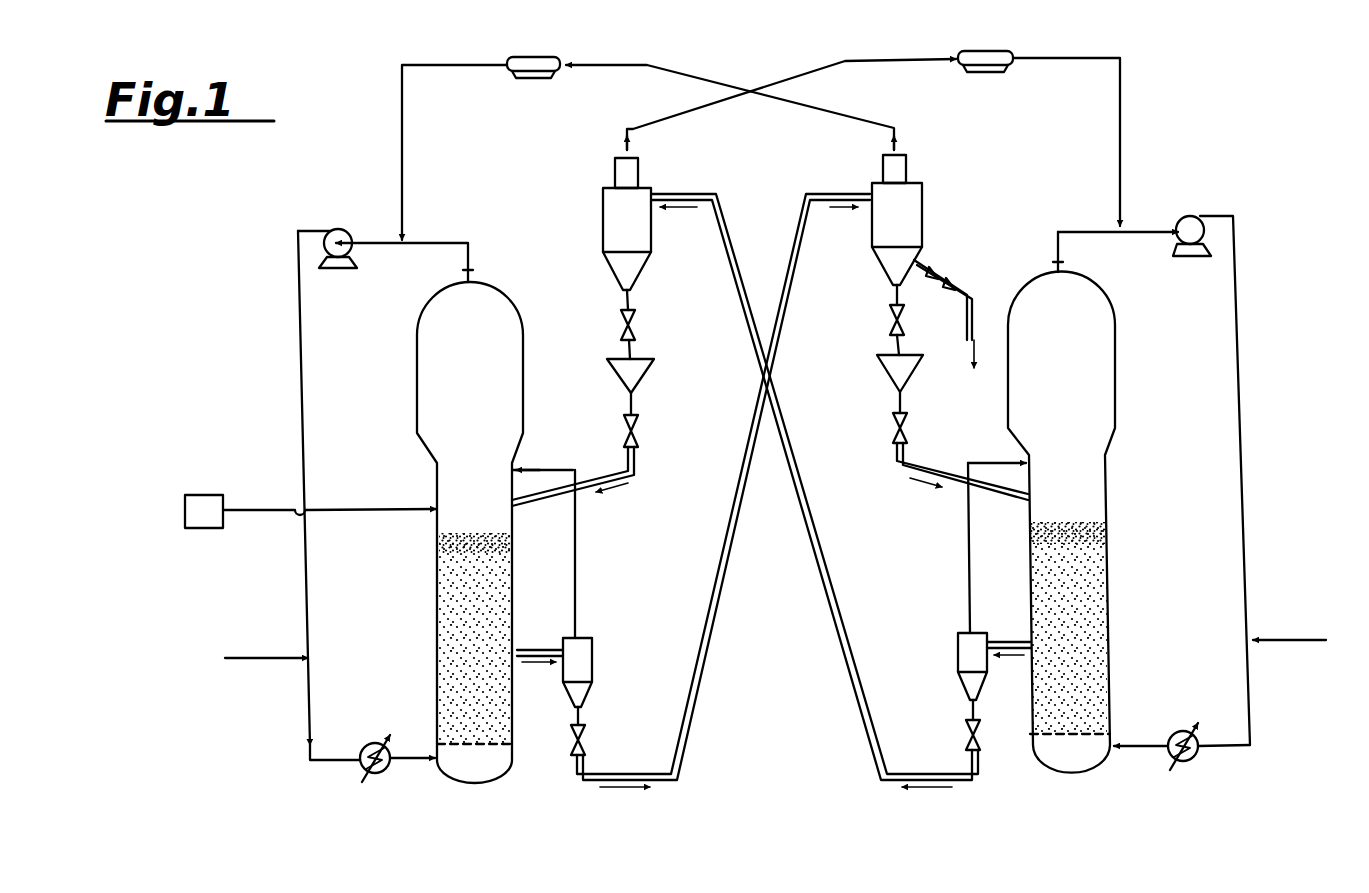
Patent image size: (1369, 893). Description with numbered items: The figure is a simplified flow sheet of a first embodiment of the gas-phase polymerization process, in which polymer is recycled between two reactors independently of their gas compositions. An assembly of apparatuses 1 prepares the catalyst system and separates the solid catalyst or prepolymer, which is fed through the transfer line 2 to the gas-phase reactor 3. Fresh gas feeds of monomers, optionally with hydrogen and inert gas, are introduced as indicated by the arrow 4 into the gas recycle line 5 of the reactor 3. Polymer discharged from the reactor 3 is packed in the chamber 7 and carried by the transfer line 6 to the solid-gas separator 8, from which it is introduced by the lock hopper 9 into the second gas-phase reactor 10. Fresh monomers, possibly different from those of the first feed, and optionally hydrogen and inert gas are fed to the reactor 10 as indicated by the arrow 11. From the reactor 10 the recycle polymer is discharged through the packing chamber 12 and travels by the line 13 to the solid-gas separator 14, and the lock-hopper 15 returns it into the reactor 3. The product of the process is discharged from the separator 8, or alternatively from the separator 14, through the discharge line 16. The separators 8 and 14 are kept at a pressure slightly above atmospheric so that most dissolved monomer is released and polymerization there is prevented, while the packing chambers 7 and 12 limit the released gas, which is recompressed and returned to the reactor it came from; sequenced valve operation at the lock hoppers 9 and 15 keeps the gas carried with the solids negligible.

The assembly of apparatuses 1 is at (197, 495).
The transfer line 2 is at (250, 512).
The gas-phase reactor 3 is at (417, 378).
The arrow 4 is at (243, 660).
The gas recycle line 5 is at (300, 388).
The transfer line 6 is at (718, 560).
The chamber 7 is at (592, 672).
The solid-gas separator 8 is at (922, 200).
The lock hopper 9 is at (877, 365).
The gas-phase reactor 10 is at (1116, 362).
The arrow 11 is at (1300, 640).
The packing chamber 12 is at (958, 668).
The line 13 is at (826, 556).
The solid-gas separator 14 is at (603, 210).
The lock-hopper 15 is at (648, 373).
The discharge line 16 is at (976, 300).